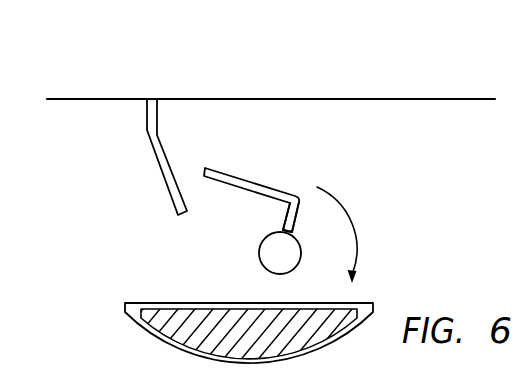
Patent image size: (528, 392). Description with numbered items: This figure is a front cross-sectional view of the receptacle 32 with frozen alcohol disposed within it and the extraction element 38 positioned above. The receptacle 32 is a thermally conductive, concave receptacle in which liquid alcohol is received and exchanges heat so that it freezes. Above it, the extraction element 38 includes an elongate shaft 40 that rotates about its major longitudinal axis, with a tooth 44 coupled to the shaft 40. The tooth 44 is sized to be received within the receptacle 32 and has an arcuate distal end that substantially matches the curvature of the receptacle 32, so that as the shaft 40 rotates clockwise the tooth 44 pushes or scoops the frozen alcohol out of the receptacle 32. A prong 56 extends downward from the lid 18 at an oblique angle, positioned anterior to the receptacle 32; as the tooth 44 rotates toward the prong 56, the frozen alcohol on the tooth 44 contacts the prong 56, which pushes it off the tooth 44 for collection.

The lid 18 is at (220, 99).
The prong 56 is at (170, 196).
The tooth 44 is at (252, 178).
The extraction element 38 is at (297, 222).
The elongate shaft 40 is at (259, 245).
The receptacle 32 is at (315, 351).